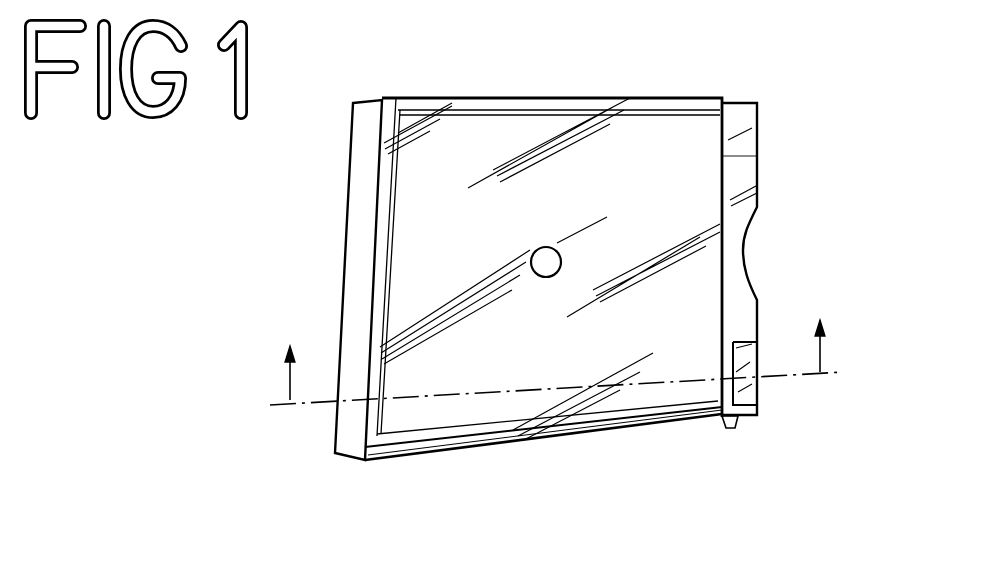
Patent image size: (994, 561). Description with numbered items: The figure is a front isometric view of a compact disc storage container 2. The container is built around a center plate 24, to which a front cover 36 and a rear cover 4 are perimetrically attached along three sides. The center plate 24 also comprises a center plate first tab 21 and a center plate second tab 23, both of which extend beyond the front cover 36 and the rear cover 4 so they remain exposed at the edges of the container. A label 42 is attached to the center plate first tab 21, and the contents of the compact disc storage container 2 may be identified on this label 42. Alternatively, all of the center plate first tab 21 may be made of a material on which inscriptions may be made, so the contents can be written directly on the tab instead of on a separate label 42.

The compact disc storage container 2 is at (187, 184).
The center plate second tab 23 is at (364, 103).
The center plate 24 is at (472, 447).
The center plate first tab 21 is at (733, 102).
The front cover 36 is at (722, 156).
The label 42 is at (757, 388).
The rear cover 4 is at (727, 430).